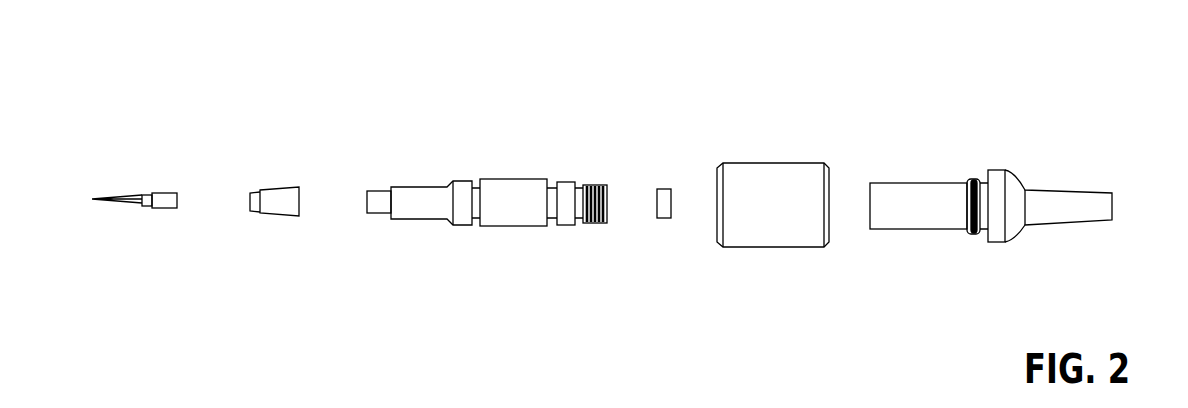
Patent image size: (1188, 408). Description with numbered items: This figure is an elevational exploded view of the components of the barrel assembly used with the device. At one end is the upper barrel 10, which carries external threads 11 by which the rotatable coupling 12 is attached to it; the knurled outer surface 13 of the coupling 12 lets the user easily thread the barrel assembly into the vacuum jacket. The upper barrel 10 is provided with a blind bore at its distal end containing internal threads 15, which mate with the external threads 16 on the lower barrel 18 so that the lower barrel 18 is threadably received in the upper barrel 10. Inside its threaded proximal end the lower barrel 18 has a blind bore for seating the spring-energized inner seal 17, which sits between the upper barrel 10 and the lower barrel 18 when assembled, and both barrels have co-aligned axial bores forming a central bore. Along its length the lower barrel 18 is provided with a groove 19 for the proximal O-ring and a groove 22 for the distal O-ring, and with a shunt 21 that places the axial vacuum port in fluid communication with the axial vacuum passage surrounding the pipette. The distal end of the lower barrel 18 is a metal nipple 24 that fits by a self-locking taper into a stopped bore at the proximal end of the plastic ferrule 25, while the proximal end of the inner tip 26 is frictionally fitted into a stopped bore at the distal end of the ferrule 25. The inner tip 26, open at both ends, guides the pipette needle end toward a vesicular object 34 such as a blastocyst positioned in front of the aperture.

The upper barrel 10 is at (923, 202).
The external threads on upper barrel 11 is at (974, 177).
The coupling 12 is at (757, 184).
The knurled outer surface of coupling 13 is at (788, 163).
The internal threads in upper barrel 15 is at (869, 222).
The external threads on lower barrel 16 is at (598, 222).
The inner seal 17 is at (663, 200).
The lower barrel 18 is at (536, 200).
The groove for proximal O-ring 19 is at (554, 221).
The shunt 21 is at (515, 179).
The groove for distal O-ring 22 is at (477, 218).
The nipple of lower barrel 24 is at (378, 213).
The ferrule 25 is at (279, 202).
The inner tip 26 is at (165, 201).
The vesicular object 34 is at (869, 204).